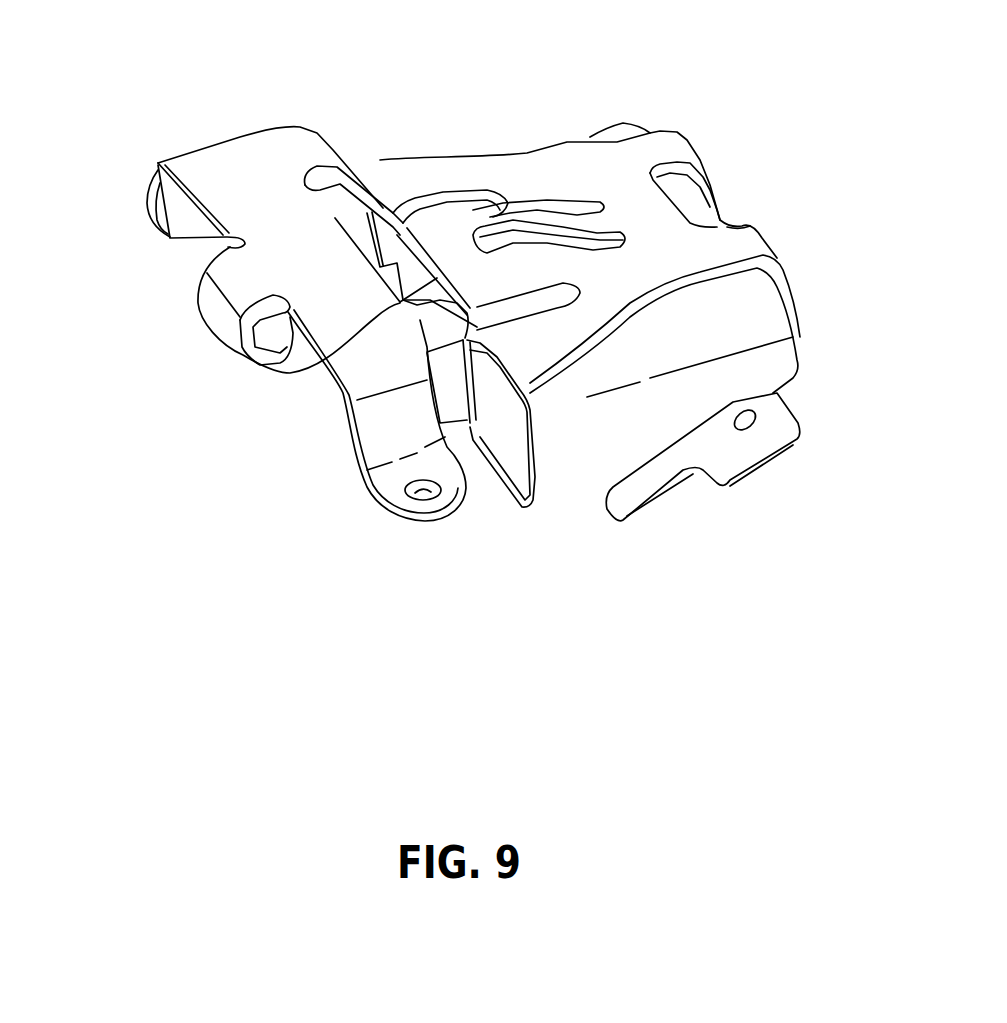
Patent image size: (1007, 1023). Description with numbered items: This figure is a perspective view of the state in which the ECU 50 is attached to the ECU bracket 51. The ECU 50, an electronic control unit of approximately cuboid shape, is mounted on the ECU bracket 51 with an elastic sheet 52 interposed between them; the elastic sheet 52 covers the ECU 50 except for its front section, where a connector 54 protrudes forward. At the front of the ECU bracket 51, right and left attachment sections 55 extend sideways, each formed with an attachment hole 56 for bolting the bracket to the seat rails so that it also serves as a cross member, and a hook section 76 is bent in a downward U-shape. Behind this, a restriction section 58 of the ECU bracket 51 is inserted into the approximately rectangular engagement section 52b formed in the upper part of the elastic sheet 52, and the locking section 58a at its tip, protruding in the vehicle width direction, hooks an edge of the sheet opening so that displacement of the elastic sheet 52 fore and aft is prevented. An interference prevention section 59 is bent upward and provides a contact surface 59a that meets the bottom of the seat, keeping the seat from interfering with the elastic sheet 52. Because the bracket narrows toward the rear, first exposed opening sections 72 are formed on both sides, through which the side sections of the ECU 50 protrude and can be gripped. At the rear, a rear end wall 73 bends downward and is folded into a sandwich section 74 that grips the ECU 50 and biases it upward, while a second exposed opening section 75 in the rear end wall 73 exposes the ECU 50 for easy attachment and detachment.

The ECU 50 is at (507, 448).
The ECU bracket 51 is at (420, 162).
The elastic sheet 52 is at (620, 438).
The engagement section 52b is at (503, 287).
The connector 54 is at (347, 427).
The attachment section 55 is at (153, 200).
The attachment hole 56 is at (413, 493).
The restriction section 58 is at (237, 378).
The locking section 58a is at (402, 230).
The interference prevention section 59 is at (543, 207).
The contact surface 59a is at (488, 228).
The first exposed opening section 72 is at (613, 143).
The rear end wall 73 is at (790, 290).
The sandwich section 74 is at (737, 450).
The second exposed opening section 75 is at (730, 227).
The hook section 76 is at (213, 307).